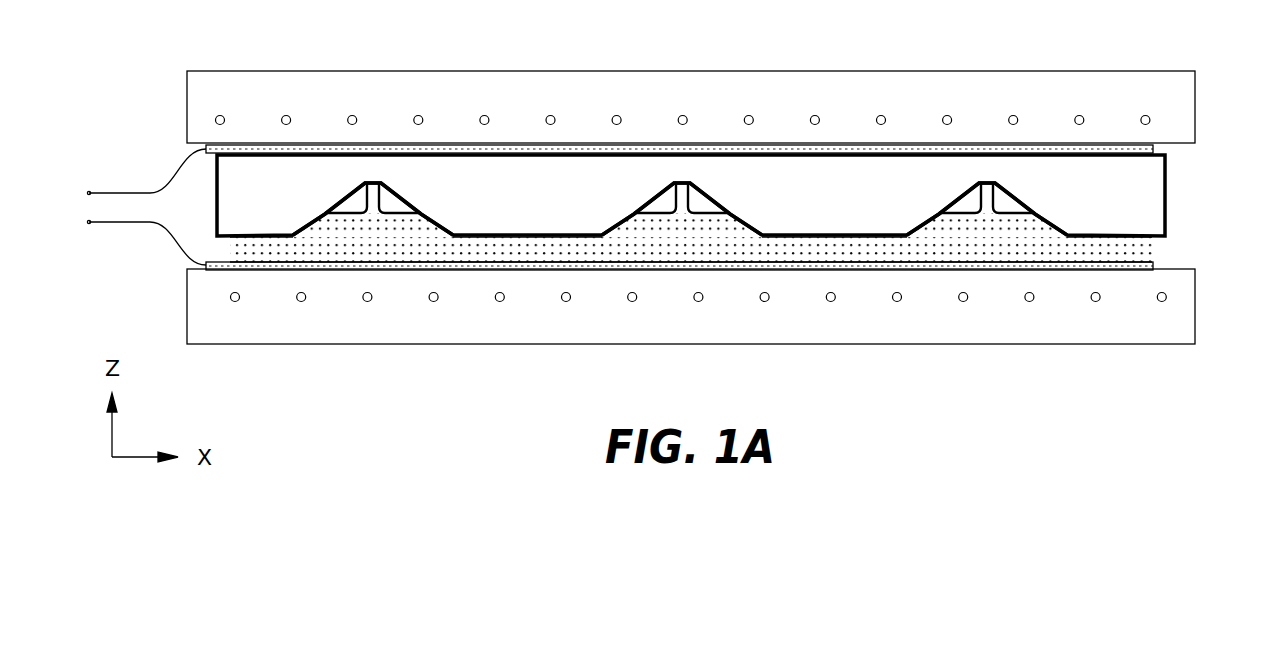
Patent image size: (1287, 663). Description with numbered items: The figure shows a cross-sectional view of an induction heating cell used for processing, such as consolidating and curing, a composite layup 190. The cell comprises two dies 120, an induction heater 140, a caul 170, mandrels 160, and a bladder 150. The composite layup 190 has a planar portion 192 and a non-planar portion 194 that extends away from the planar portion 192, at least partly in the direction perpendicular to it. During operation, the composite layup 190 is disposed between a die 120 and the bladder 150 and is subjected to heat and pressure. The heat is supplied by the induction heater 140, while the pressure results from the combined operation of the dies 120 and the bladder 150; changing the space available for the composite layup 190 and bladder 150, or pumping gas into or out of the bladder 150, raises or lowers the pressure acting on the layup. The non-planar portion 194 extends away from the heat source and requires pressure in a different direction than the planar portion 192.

The die 120 is at (1182, 98).
The induction heater 140 is at (1153, 151).
The bladder 150 is at (1167, 189).
The mandrel 160 is at (1005, 205).
The caul 170 is at (989, 243).
The composite layup 190 is at (1153, 250).
The planar portion 192 is at (868, 247).
The non-planar portion 194 is at (987, 245).